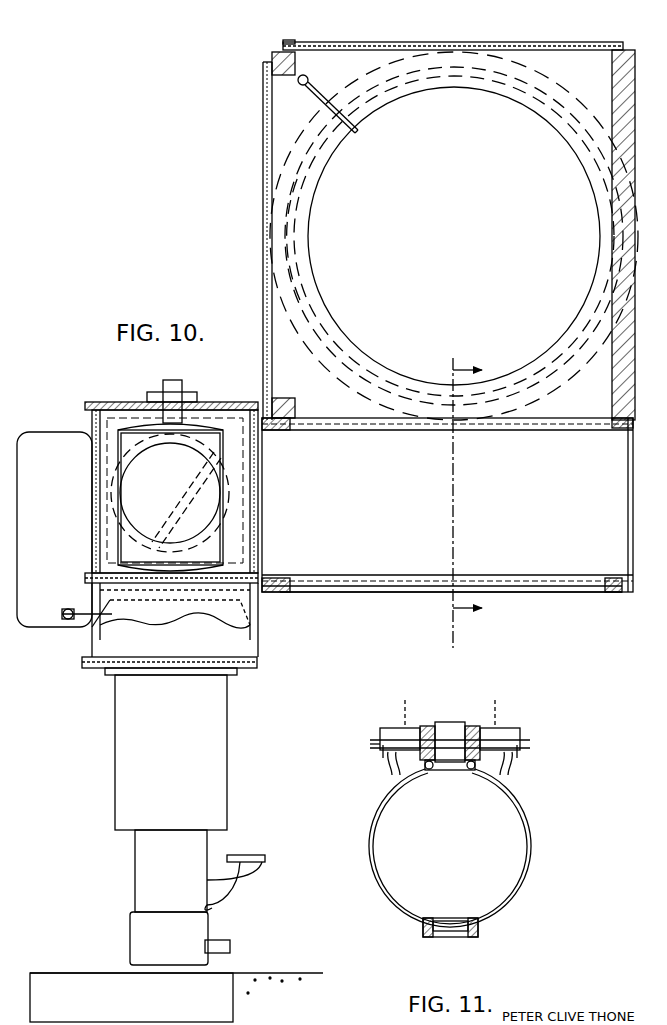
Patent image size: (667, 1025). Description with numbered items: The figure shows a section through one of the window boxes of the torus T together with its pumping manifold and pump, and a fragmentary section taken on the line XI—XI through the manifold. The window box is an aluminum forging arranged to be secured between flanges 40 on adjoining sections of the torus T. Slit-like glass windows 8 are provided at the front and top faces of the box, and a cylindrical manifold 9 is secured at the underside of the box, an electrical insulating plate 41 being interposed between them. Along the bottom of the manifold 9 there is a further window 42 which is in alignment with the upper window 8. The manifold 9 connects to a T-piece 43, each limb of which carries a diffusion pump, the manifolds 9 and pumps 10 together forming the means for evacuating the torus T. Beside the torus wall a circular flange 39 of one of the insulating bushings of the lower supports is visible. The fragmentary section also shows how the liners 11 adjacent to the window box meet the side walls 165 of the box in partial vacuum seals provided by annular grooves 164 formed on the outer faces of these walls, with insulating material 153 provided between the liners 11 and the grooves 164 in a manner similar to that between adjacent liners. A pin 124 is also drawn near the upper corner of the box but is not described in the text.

In FIG. 10, the glass window 8 is at (268, 241).
In FIG. 10, the manifold 9 is at (349, 560).
In FIG. 11, the manifold 9 is at (383, 822).
In FIG. 10, the pump 10 is at (240, 638).
In FIG. 11, the liner 11 is at (372, 735).
In FIG. 11, the circular flange 39 is at (383, 758).
In FIG. 10, the flange 40 is at (290, 160).
In FIG. 10, the electrical insulating plate 41 is at (292, 416).
In FIG. 11, the electrical insulating plate 41 is at (480, 768).
In FIG. 10, the window 42 is at (525, 590).
In FIG. 11, the window 42 is at (452, 932).
In FIG. 10, the T-piece 43 is at (90, 421).
In FIG. 10, the pin 124 is at (310, 92).
In FIG. 11, the insulating material 153 is at (388, 758).
In FIG. 11, the annular groove 164 is at (470, 725).
In FIG. 10, the side wall 165 is at (289, 119).
In FIG. 11, the side wall 165 is at (466, 770).
In FIG. 10, the torus T is at (298, 247).
In FIG. 11, the torus T is at (372, 744).
In FIG. 10, the section line XI— XI is at (462, 493).